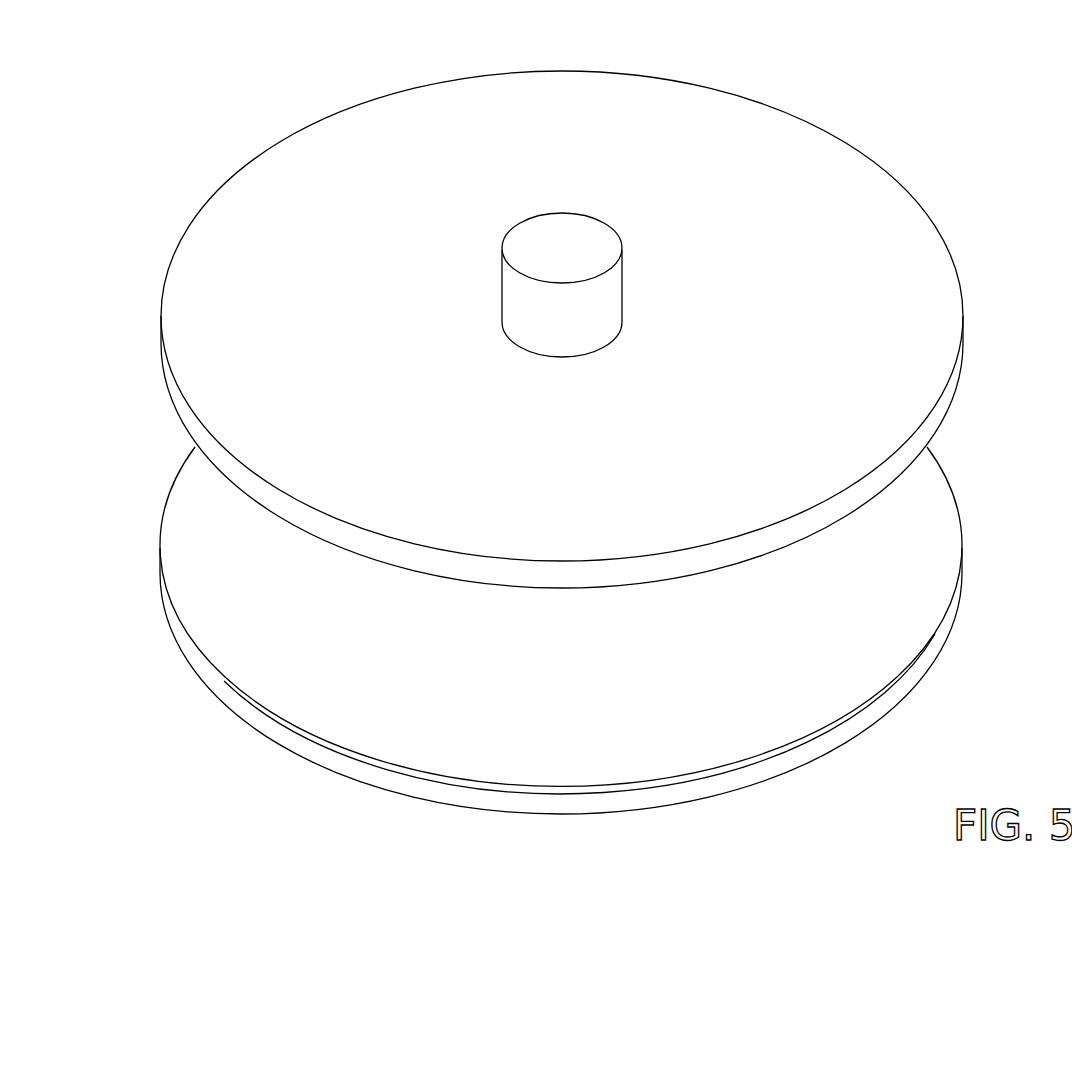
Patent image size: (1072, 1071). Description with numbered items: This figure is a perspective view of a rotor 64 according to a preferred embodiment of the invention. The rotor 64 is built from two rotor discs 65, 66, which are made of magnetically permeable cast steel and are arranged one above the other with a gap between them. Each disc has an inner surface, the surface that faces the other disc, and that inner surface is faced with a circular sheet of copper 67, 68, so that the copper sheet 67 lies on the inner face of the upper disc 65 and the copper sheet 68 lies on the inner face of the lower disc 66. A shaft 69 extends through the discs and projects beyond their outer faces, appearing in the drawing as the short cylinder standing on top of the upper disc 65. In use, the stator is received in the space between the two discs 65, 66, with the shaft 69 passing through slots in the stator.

The rotor 64 is at (564, 426).
The rotor disc 65 is at (858, 223).
The rotor disc 66 is at (933, 645).
The circular sheet of copper 67 is at (937, 435).
The circular sheet of copper 68 is at (342, 707).
The shaft 69 is at (562, 228).